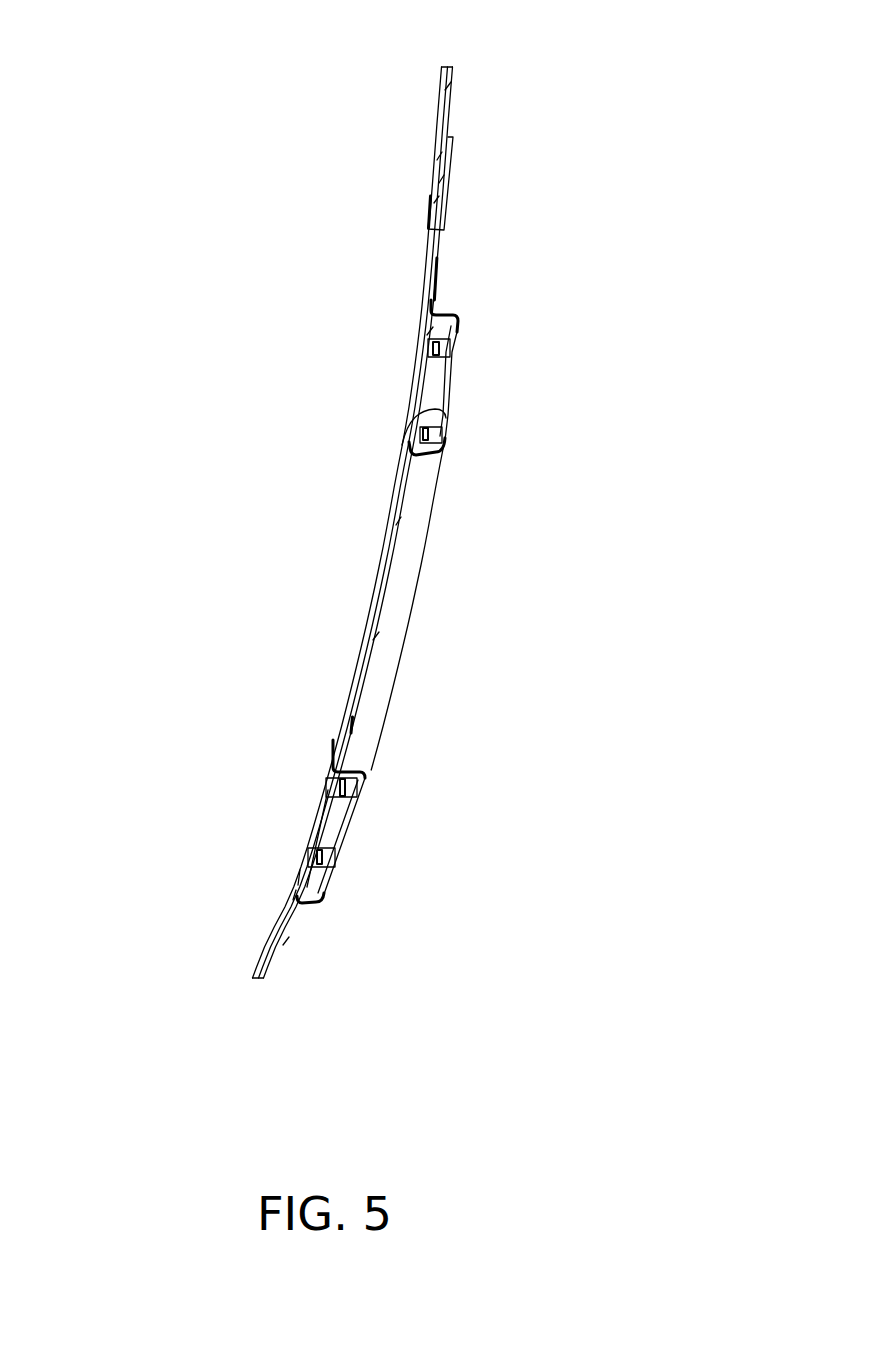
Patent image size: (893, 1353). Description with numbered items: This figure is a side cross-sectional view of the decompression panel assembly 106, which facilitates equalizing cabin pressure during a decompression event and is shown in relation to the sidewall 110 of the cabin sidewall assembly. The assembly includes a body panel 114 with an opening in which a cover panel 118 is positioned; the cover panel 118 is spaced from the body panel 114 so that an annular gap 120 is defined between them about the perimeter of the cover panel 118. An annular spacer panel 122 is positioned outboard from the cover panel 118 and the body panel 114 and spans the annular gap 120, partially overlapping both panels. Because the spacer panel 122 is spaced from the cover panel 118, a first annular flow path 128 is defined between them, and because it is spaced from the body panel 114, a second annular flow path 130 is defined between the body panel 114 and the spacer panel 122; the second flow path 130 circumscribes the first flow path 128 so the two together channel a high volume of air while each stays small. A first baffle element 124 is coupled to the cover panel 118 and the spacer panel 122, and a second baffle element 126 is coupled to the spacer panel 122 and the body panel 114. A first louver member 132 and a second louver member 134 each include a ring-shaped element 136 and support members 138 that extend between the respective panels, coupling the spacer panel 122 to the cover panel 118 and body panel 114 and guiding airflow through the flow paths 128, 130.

The decompression panel assembly 106 is at (119, 306).
The sidewall 110 is at (440, 123).
The body panel 114 is at (441, 248).
The cover panel 118 is at (378, 572).
The annular gap 120 is at (376, 623).
The annular spacer panel 122 is at (445, 386).
The first baffle element 124 is at (427, 472).
The second baffle element 126 is at (458, 313).
The first annular flow path 128 is at (356, 757).
The second annular flow path 130 is at (303, 882).
The first louver member 132 is at (327, 765).
The second louver member 134 is at (296, 866).
The ring-shaped element 136 is at (455, 351).
The support members 138 is at (410, 378).